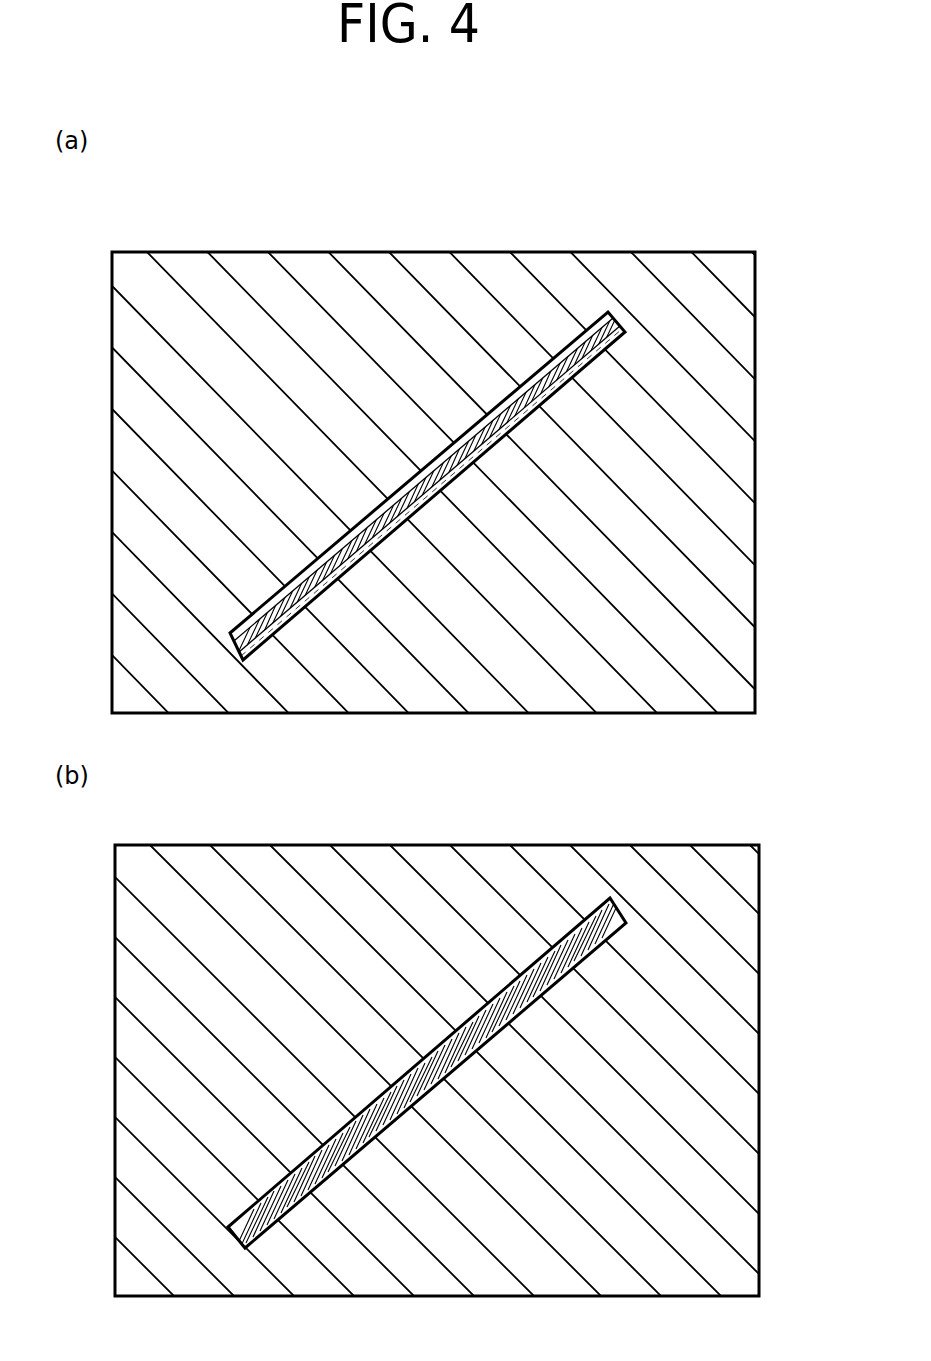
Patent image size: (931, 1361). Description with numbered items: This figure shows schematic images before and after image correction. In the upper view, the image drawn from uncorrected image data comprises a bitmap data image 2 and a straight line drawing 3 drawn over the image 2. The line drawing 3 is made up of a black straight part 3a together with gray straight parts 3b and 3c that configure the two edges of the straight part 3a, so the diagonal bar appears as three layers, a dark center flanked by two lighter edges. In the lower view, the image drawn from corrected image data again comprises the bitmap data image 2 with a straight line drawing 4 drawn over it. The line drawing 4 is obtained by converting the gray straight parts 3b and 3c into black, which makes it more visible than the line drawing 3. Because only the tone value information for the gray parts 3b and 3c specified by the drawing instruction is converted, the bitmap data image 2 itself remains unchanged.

The bitmap data image 2 is at (737, 403).
The straight line drawing 3 is at (427, 395).
The black straight part 3a is at (497, 405).
The gray straight part 3b is at (432, 457).
The gray straight part 3c is at (570, 383).
The straight line drawing 4 is at (531, 967).